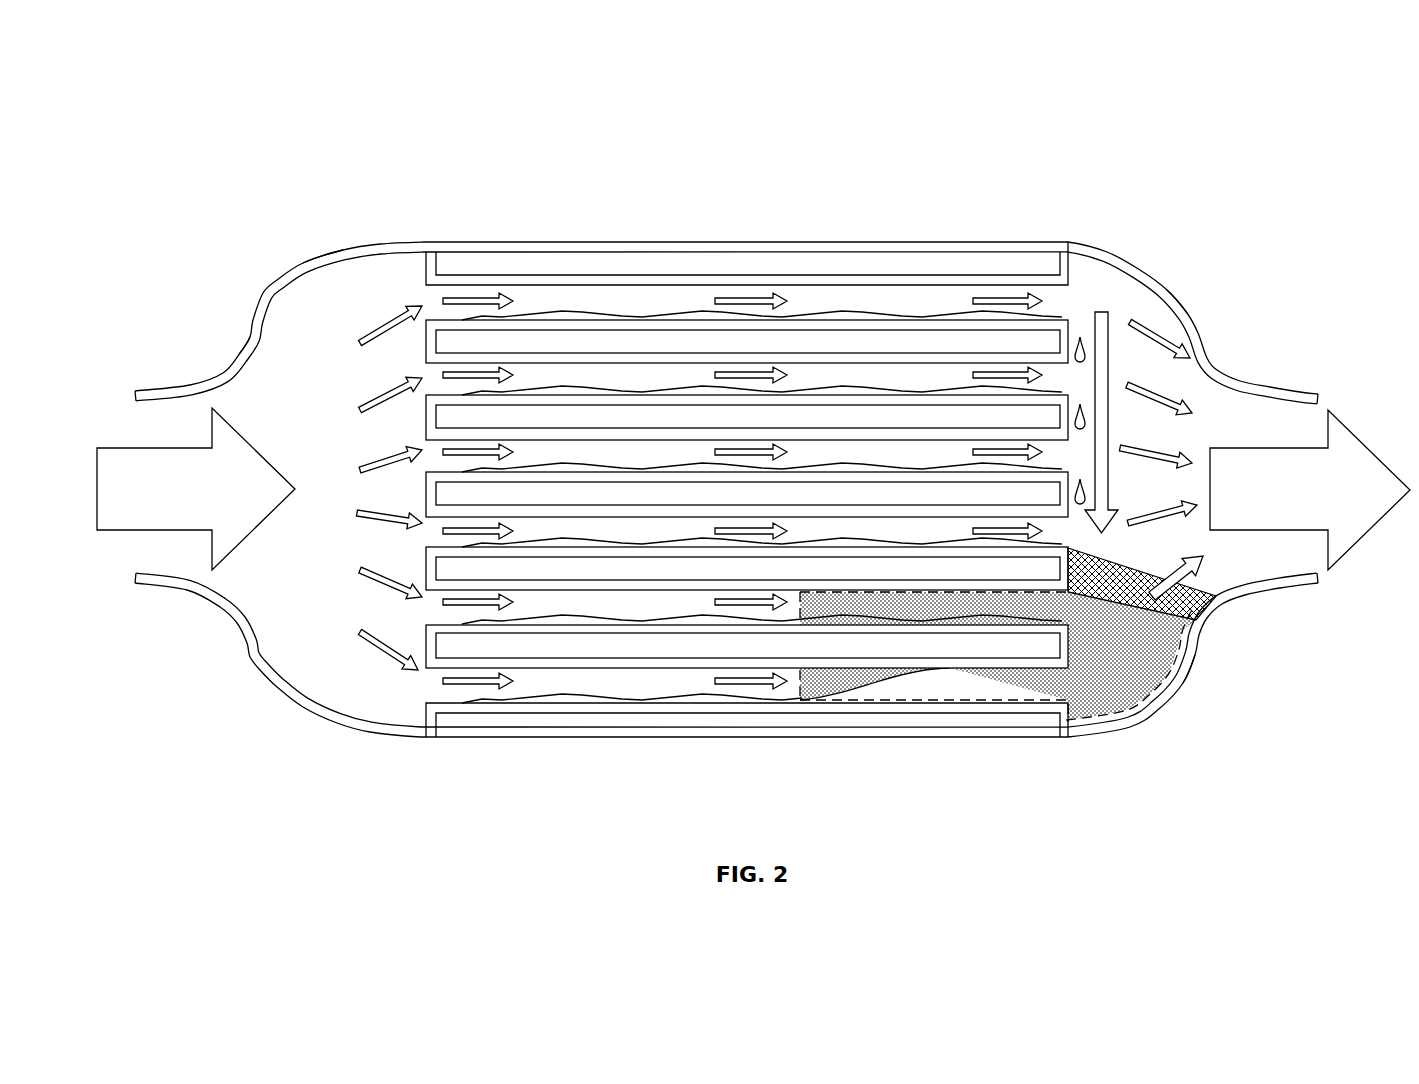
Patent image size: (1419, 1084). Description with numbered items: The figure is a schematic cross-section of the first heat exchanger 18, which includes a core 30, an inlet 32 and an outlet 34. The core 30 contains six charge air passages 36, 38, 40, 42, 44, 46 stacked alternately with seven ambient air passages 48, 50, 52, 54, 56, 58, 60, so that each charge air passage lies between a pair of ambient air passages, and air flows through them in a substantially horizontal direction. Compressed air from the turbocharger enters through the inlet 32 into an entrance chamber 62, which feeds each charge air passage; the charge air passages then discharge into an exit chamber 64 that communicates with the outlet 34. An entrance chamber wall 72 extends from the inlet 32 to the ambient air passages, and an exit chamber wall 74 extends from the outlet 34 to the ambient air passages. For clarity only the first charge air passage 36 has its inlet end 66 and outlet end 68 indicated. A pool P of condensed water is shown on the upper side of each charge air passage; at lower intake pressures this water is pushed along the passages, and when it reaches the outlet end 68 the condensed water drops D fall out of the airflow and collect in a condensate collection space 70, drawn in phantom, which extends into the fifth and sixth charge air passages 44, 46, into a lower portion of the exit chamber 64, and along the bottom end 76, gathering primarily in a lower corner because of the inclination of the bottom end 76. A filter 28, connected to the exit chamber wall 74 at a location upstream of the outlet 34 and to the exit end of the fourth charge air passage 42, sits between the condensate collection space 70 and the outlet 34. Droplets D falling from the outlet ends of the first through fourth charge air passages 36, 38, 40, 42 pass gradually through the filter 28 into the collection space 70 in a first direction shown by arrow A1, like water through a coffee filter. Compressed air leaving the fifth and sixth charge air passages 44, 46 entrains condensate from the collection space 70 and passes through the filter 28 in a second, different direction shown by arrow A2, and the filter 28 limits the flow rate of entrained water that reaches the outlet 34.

The first heat exchanger 18 is at (790, 200).
The filter 28 is at (1201, 588).
The core 30 is at (726, 537).
The inlet 32 is at (133, 390).
The outlet 34 is at (1318, 385).
The first charge air passage 36 is at (520, 303).
The second charge air passage 38 is at (572, 375).
The third charge air passage 40 is at (640, 455).
The fourth charge air passage 42 is at (575, 522).
The fifth charge air passage 44 is at (608, 607).
The sixth charge air passage 46 is at (680, 682).
The ambient air passage 48 is at (752, 262).
The ambient air passage 50 is at (845, 345).
The ambient air passage 52 is at (898, 420).
The ambient air passage 54 is at (935, 495).
The ambient air passage 56 is at (870, 565).
The ambient air passage 58 is at (925, 648).
The ambient air passage 60 is at (983, 725).
The entrance chamber 62 is at (315, 335).
The exit chamber 64 is at (1173, 320).
The inlet end 66 is at (428, 298).
The outlet end 68 is at (1070, 300).
The condensate collection space 70 is at (1150, 705).
The entrance chamber wall 72 is at (257, 305).
The exit chamber wall 74 is at (1200, 703).
The bottom end 76 is at (777, 745).
The pool P is at (705, 308).
The condensed water drops D is at (1087, 416).
The arrow indicating first direction A1 is at (1158, 368).
The arrow indicating second direction A2 is at (1205, 560).